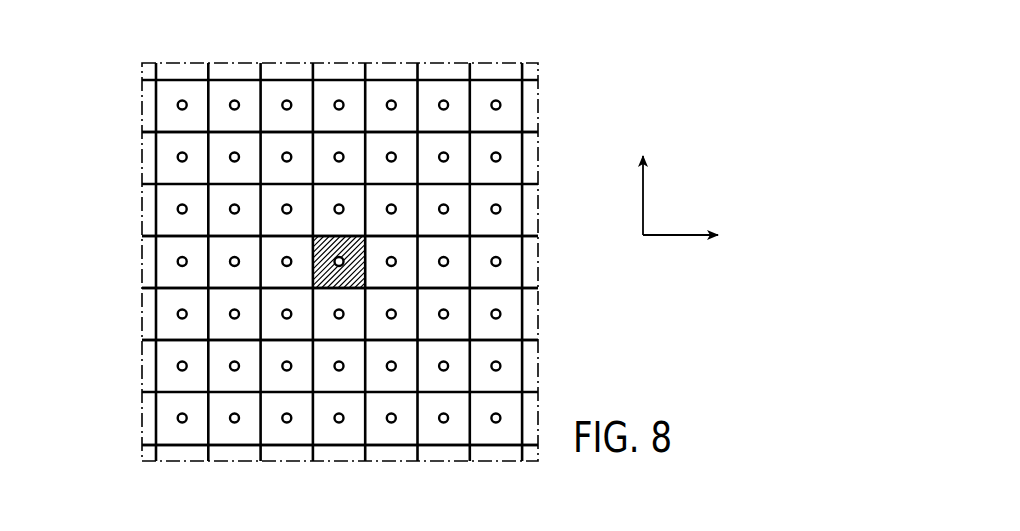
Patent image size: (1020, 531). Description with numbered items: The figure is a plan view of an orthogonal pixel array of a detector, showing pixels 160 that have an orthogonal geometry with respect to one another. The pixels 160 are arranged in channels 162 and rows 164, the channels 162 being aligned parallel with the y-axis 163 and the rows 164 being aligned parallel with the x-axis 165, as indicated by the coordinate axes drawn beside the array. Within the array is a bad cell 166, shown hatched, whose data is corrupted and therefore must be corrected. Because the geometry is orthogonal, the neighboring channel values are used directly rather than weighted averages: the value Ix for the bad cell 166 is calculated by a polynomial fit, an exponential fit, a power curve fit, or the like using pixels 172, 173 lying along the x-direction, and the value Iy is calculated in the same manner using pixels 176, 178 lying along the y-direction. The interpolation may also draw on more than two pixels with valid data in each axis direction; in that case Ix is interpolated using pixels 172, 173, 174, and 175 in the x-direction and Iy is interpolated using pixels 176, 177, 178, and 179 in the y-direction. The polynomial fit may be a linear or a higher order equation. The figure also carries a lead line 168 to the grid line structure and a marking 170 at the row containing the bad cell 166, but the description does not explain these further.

The pixels 160 is at (602, 112).
The channels 162 is at (391, 466).
The y-axis 163 is at (645, 196).
The rows 164 is at (128, 161).
The x-axis 165 is at (680, 237).
The bad cell 166 is at (348, 237).
The grid line 168 is at (336, 465).
The row containing selected pixel 170 is at (127, 264).
The pixel 172 is at (402, 247).
The pixel 173 is at (282, 247).
The pixel 174 is at (452, 277).
The pixel 175 is at (226, 250).
The pixel 176 is at (318, 328).
The pixel 177 is at (320, 380).
The pixel 178 is at (358, 176).
The pixel 179 is at (333, 197).